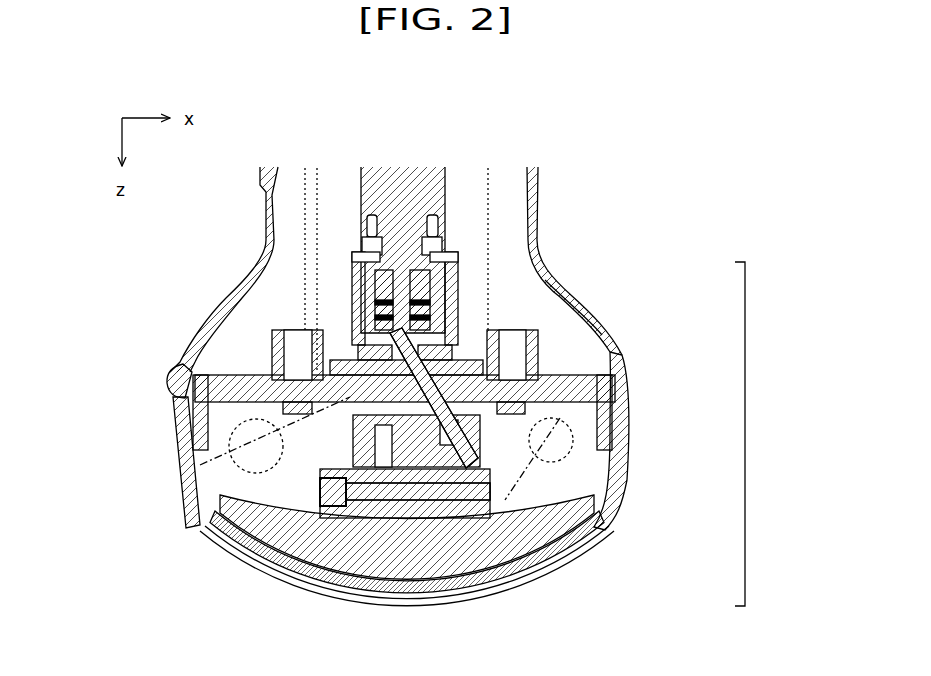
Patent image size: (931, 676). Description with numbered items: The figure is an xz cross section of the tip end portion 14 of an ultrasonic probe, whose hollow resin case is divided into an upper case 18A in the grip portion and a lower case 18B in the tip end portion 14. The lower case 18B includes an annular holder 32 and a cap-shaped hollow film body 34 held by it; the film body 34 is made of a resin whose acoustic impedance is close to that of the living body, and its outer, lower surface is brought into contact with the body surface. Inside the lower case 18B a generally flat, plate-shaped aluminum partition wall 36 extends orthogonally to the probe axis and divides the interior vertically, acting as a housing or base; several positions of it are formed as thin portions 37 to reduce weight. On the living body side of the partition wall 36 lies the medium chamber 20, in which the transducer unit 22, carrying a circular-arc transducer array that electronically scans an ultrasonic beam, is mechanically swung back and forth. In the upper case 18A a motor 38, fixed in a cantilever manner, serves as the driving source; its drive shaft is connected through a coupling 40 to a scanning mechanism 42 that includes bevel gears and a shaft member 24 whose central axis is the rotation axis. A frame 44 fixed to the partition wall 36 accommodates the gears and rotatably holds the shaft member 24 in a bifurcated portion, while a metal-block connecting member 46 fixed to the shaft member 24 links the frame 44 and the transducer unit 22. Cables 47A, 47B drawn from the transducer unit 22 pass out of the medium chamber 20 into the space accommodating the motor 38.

The tip end portion 14 is at (745, 434).
The upper case 18A is at (540, 178).
The lower case 18B is at (634, 420).
The medium chamber 20 is at (220, 465).
The transducer unit 22 is at (233, 540).
The shaft member 24 is at (372, 470).
The annular holder 32 is at (622, 484).
The film body 34 is at (510, 591).
The partition wall 36 is at (293, 440).
The thin portion 37 is at (192, 372).
The motor 38 is at (445, 184).
The coupling 40 is at (377, 283).
The scanning mechanism 42 is at (366, 410).
The frame 44 is at (533, 250).
The connecting member 46 is at (420, 523).
The cable 47A is at (560, 418).
The cable 47B is at (500, 308).